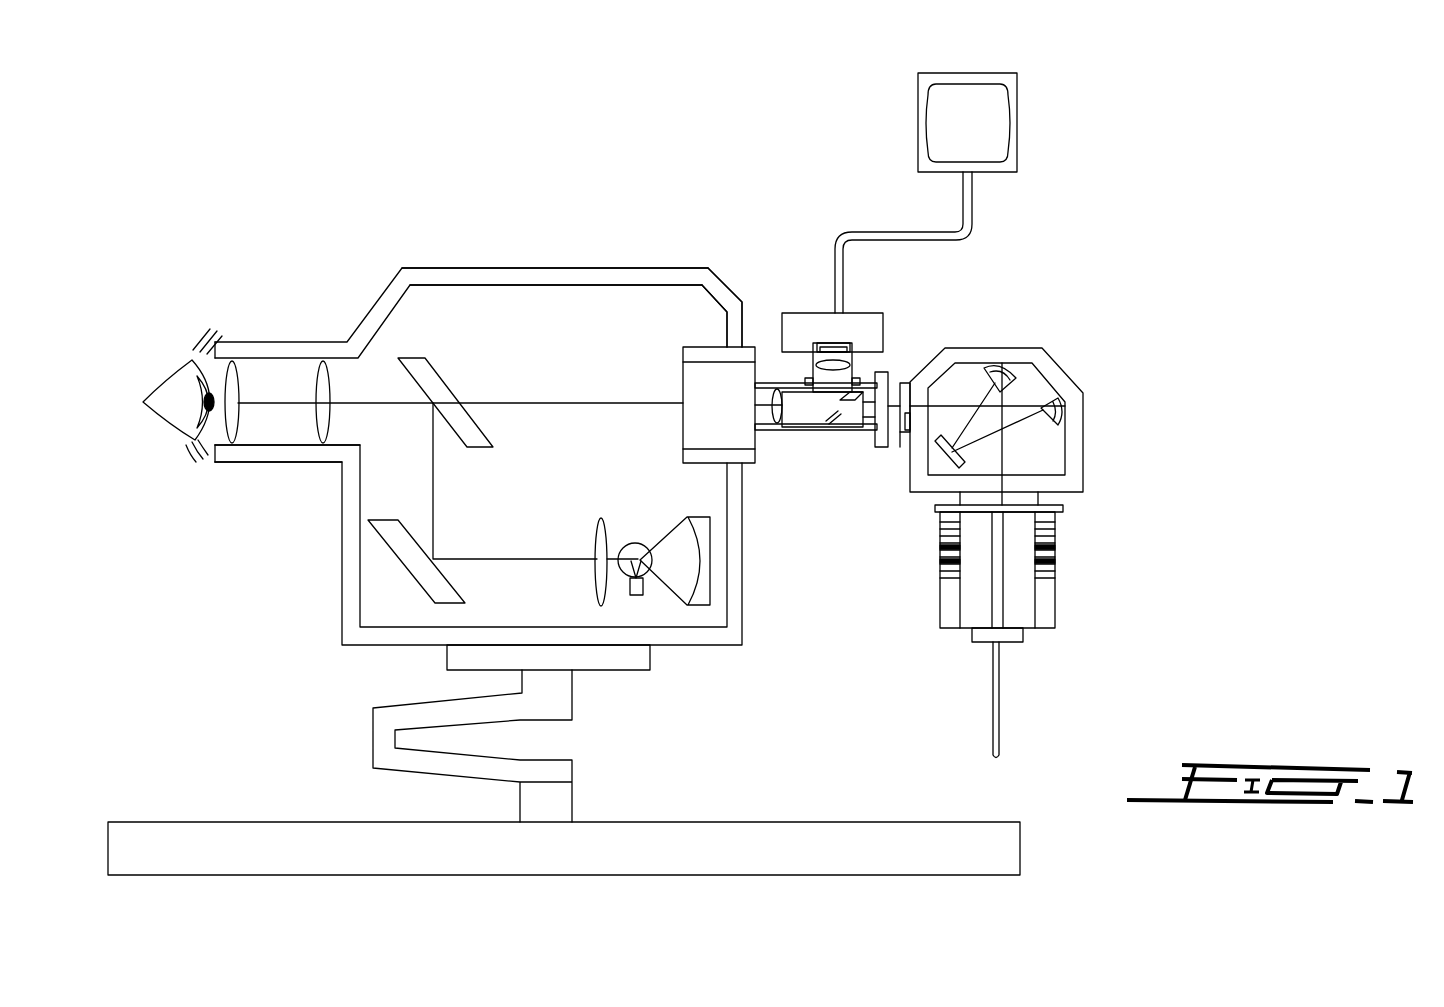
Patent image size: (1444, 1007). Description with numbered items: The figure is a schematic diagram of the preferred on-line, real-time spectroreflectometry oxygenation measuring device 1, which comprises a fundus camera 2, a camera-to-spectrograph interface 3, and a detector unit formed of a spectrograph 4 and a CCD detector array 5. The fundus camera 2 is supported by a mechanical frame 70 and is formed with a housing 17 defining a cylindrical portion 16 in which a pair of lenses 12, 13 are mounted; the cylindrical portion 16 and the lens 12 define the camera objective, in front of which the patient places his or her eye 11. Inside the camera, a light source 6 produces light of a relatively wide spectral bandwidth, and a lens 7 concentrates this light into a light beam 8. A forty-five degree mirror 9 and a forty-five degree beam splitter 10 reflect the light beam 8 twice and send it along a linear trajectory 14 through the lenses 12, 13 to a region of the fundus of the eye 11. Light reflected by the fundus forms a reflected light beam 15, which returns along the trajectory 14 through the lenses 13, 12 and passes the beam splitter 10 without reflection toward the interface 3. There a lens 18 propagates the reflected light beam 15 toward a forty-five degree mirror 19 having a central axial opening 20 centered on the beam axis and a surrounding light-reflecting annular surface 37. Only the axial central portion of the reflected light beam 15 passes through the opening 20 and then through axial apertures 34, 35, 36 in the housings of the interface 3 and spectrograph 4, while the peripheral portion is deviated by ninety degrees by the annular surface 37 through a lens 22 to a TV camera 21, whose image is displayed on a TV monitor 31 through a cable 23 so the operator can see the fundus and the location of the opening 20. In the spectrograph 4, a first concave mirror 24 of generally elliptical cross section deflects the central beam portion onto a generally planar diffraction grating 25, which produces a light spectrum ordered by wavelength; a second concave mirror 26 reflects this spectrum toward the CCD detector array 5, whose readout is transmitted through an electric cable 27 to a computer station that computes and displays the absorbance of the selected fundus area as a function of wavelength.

The spectroreflectometry oxygenation measuring device 1 is at (330, 215).
The fundus camera 2 is at (597, 266).
The camera-to-spectrograph interface 3 is at (778, 434).
The spectrograph 4 is at (1064, 362).
The CCD detector array 5 is at (938, 607).
The light source 6 is at (640, 545).
The lens 7 is at (596, 582).
The light beam 8 is at (495, 557).
The 45° mirror 9 is at (413, 585).
The 45° beam splitter 10 is at (450, 386).
The patient's eye 11 is at (163, 421).
The lens 12 is at (247, 362).
The lens 13 is at (313, 376).
The linear trajectory 14 is at (278, 402).
The reflected light beam 15 is at (617, 403).
The cylindrical portion 16 is at (280, 460).
The housing 17 is at (448, 275).
The lens 18 is at (772, 400).
The 45° mirror 19 is at (828, 418).
The central axial opening 20 is at (843, 405).
The TV camera 21 is at (862, 313).
The lens 22 is at (822, 364).
The cable 23 is at (970, 210).
The first concave mirror 24 is at (1062, 410).
The diffraction grating 25 is at (945, 457).
The second concave mirror 26 is at (1003, 362).
The electric cable 27 is at (1000, 686).
The TV monitor 31 is at (1017, 117).
The axial aperture 34 is at (884, 408).
The axial aperture 35 is at (908, 392).
The axial aperture 36 is at (906, 422).
The light-reflecting annular surface 37 is at (813, 417).
The mechanical frame 70 is at (345, 822).